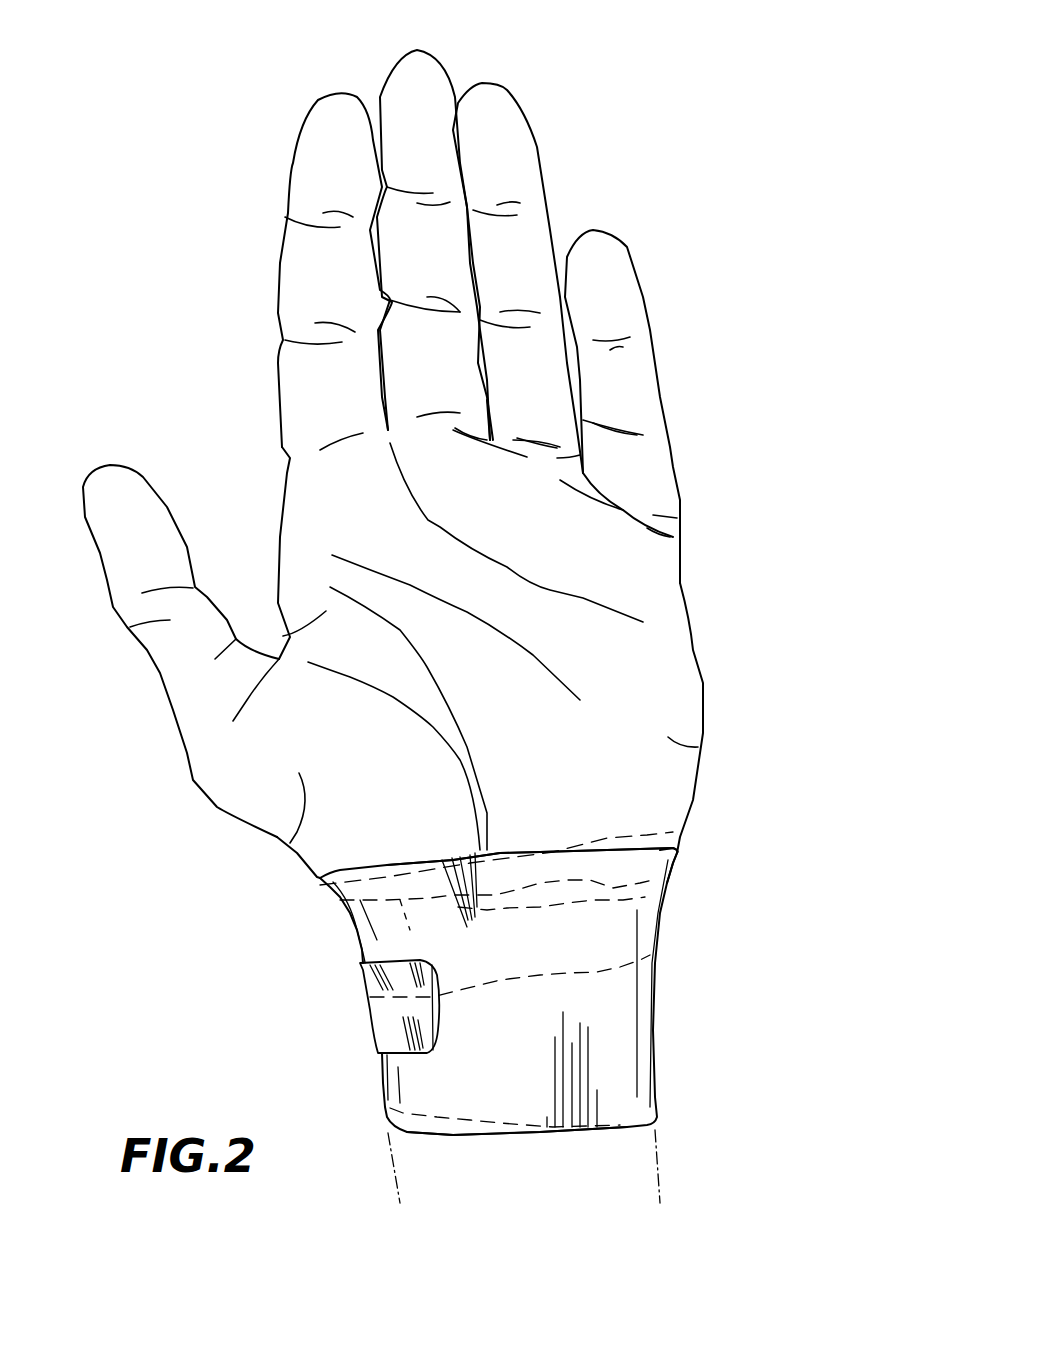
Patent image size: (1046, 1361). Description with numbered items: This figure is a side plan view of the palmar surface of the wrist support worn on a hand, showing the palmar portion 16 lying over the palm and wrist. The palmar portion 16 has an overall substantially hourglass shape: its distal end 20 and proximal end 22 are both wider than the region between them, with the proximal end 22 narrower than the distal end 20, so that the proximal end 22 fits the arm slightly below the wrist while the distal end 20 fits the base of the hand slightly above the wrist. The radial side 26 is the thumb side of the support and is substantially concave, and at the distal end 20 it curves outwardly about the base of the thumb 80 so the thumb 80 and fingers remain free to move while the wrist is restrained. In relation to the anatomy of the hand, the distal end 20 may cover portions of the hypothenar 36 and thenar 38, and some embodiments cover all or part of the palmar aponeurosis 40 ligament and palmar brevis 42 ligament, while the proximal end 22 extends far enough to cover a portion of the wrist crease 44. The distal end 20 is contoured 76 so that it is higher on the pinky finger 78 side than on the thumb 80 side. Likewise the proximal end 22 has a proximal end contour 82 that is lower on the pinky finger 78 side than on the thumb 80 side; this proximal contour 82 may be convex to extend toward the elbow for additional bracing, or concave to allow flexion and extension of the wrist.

The palmar portion 16 is at (587, 923).
The distal end 20 is at (548, 838).
The proximal end 22 is at (524, 1150).
The radial side 26 is at (345, 1016).
The hypothenar 36 is at (672, 762).
The thenar 38 is at (180, 802).
The palmar aponeurosis ligament 40 is at (520, 783).
The palmar brevis ligament 42 is at (660, 817).
The wrist crease 44 is at (547, 975).
The distal contour 76 is at (677, 837).
The pinky finger 78 is at (630, 388).
The thumb 80 is at (120, 533).
The proximal end contour 82 is at (610, 1130).